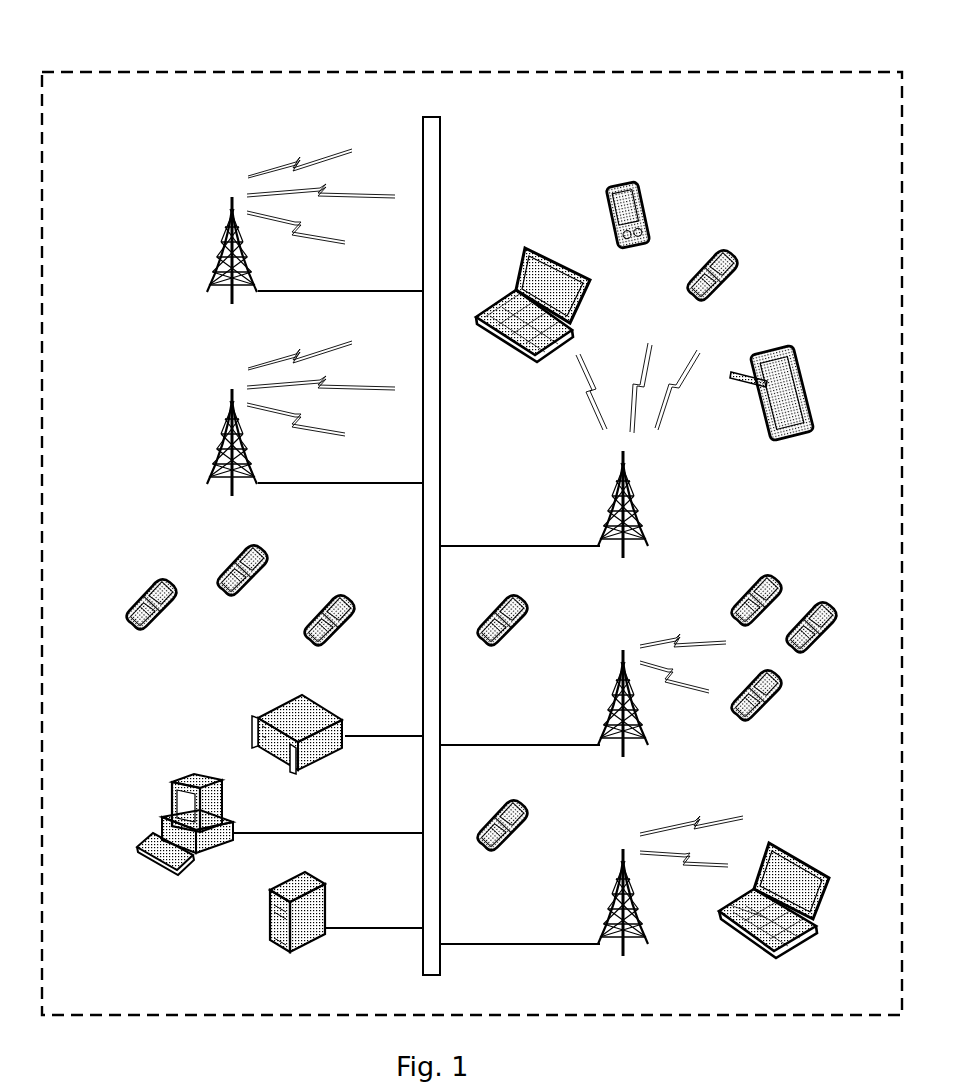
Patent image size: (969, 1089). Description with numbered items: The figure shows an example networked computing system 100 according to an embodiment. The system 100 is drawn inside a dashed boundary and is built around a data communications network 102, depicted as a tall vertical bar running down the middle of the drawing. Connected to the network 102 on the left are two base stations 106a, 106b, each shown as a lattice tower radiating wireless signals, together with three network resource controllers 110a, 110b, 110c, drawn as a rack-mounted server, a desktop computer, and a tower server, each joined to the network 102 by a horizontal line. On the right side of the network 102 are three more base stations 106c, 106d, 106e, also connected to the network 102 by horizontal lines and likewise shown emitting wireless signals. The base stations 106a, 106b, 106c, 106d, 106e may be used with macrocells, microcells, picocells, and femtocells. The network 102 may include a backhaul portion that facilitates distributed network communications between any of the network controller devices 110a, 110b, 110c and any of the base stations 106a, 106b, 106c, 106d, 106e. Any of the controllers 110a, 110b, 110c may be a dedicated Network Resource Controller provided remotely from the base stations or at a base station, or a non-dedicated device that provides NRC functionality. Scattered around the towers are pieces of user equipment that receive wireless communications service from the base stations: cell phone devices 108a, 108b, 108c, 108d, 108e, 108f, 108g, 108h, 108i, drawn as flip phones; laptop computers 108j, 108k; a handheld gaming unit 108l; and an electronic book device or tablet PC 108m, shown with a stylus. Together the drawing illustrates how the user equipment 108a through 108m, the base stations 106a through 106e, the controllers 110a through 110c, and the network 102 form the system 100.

The networked computing system 100 is at (329, 40).
The data communications network 102 is at (423, 131).
The base station 106a is at (222, 252).
The base station 106b is at (219, 444).
The base station 106c is at (611, 897).
The base station 106d is at (612, 702).
The base station 106e is at (646, 516).
The cell phone device 108a is at (138, 601).
The cell phone device 108b is at (236, 557).
The cell phone device 108c is at (318, 640).
The cell phone device 108d is at (530, 810).
The cell phone device 108e is at (766, 716).
The cell phone device 108f is at (826, 641).
The cell phone device 108g is at (780, 579).
The cell phone device 108h is at (530, 604).
The cell phone device 108i is at (748, 259).
The laptop computer 108j is at (796, 858).
The laptop computer 108k is at (532, 257).
The handheld gaming unit 108l is at (650, 206).
The electronic book device or tablet PC 108m is at (802, 363).
The network resource controller 110a is at (253, 735).
The network resource controller 110b is at (169, 783).
The network resource controller 110c is at (268, 930).